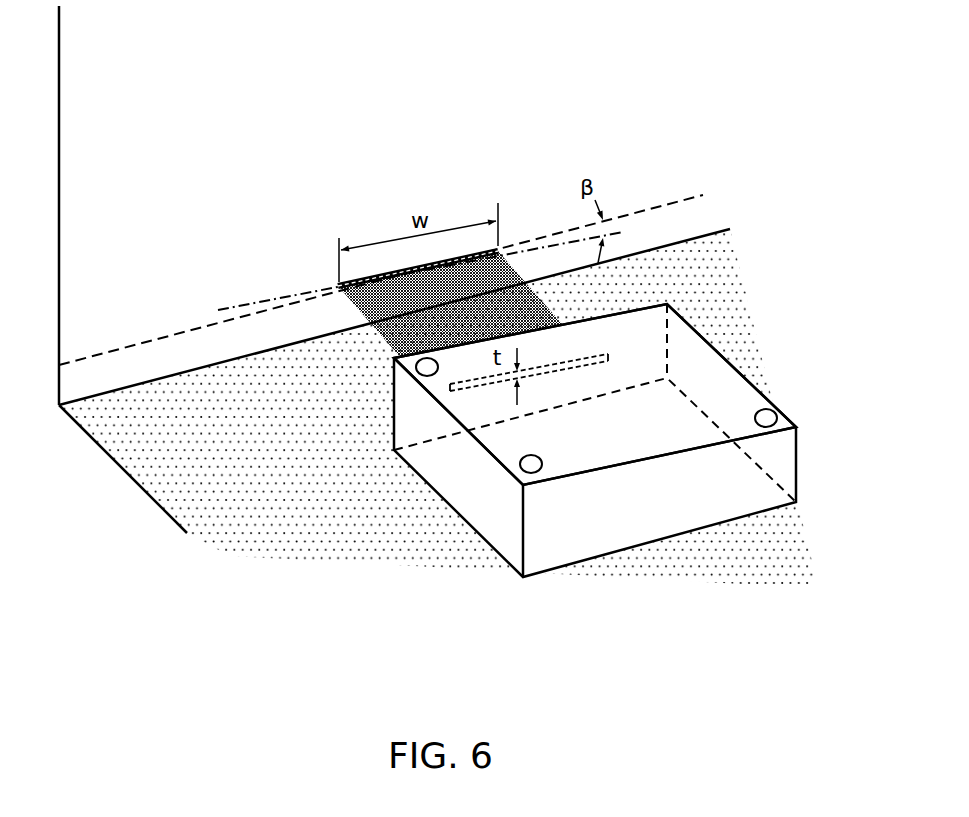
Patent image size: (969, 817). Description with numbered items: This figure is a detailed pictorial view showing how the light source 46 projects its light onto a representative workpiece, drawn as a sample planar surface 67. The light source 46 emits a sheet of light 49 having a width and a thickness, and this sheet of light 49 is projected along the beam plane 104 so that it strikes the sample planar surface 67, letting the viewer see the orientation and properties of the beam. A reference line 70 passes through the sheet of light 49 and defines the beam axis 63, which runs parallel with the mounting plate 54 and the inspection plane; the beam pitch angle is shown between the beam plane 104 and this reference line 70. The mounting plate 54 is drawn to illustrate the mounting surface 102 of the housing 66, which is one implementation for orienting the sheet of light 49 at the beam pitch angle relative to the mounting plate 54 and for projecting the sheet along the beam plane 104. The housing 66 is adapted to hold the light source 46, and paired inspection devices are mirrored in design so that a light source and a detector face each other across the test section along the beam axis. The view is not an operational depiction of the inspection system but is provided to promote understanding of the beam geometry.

The sample planar surface 67 is at (459, 105).
The reference line 70 is at (640, 210).
The beam plane 104 is at (268, 298).
The mounting plate 54 is at (191, 408).
The beam axis 63 is at (420, 272).
The sheet of light 49 is at (394, 340).
The light source 46 is at (608, 355).
The housing 66 is at (697, 385).
The mounting surface 102 is at (679, 541).